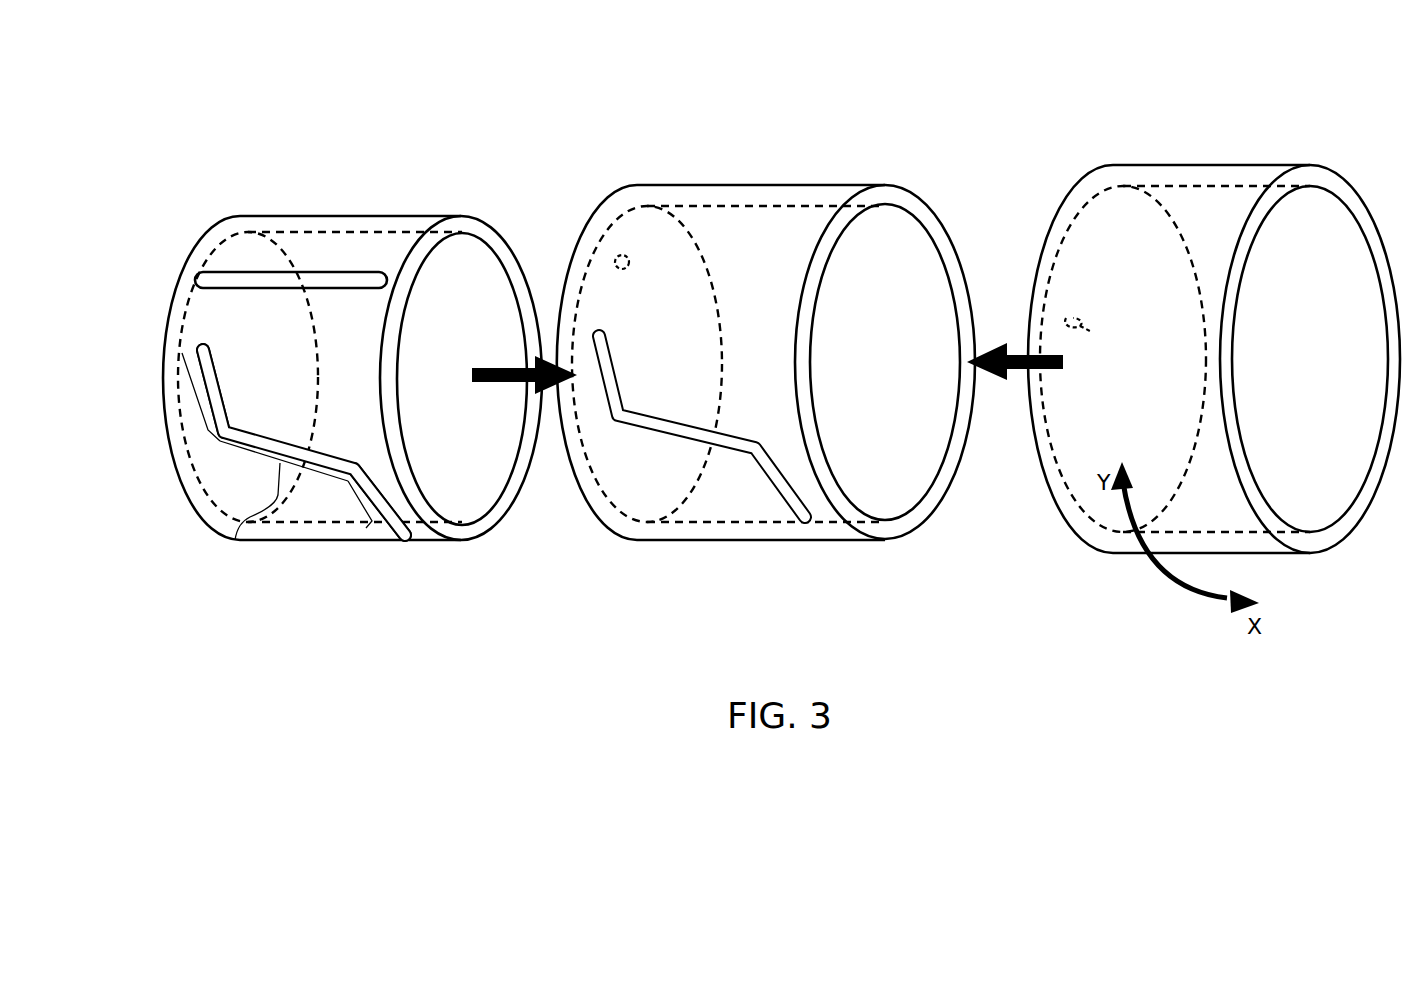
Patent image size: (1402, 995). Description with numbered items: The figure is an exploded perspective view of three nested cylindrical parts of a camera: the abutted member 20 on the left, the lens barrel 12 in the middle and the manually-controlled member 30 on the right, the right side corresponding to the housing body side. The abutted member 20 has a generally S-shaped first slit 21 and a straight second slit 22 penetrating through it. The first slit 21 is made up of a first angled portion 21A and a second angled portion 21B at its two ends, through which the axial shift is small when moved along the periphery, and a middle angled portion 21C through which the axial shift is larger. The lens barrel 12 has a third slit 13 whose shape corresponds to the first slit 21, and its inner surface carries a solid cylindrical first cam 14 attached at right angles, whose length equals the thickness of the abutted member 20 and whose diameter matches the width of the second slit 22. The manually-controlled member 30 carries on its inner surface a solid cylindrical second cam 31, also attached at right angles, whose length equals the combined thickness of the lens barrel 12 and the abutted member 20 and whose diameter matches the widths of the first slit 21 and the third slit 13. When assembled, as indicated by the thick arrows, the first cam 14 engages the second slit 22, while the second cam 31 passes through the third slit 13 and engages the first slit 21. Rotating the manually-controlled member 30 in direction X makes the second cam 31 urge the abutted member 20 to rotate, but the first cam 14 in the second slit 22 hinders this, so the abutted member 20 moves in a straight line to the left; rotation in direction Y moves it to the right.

The lens barrel 12 is at (740, 183).
The third slit 13 is at (740, 452).
The first cam 14 is at (628, 268).
The abutted member 20 is at (315, 217).
The first slit 21 is at (240, 465).
The first angled portion 21A is at (194, 400).
The second angled portion 21B is at (395, 525).
The middle angled portion 21C is at (235, 540).
The second slit 22 is at (262, 275).
The manually-controlled member 30 is at (1213, 162).
The second cam 31 is at (1086, 322).